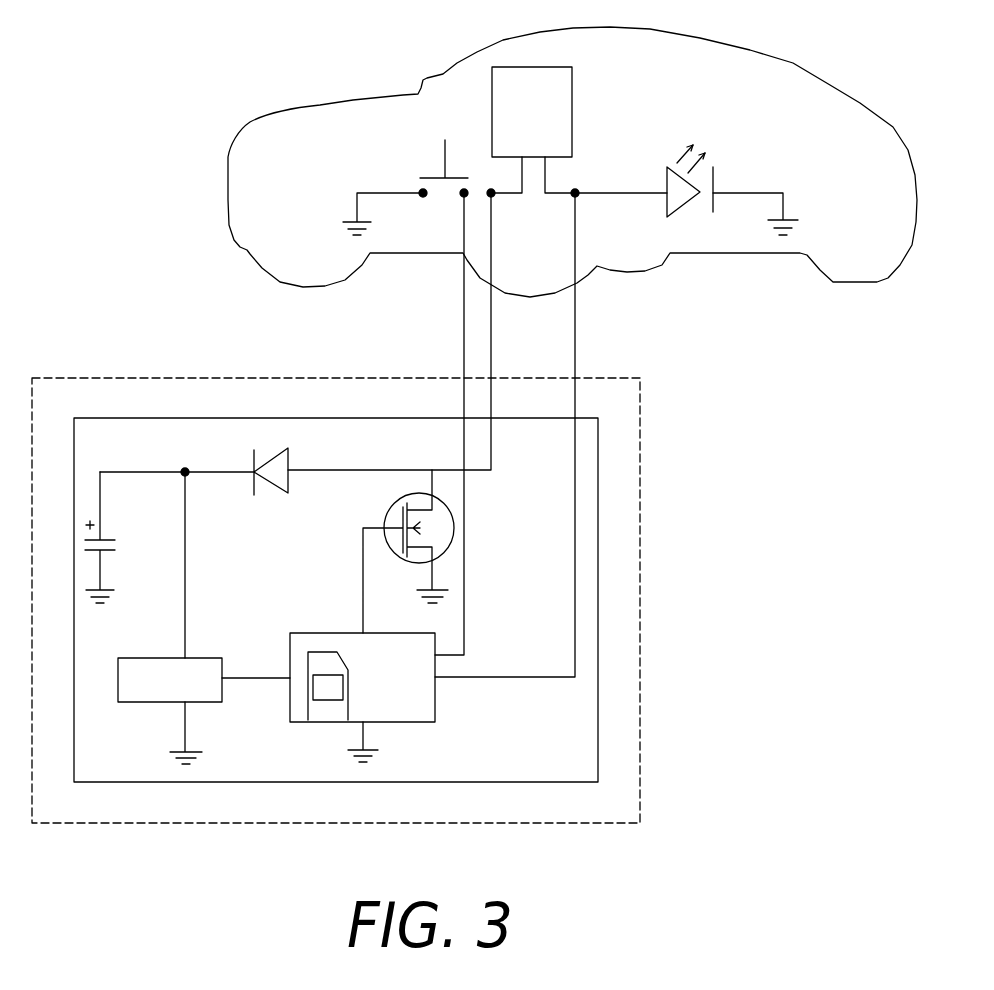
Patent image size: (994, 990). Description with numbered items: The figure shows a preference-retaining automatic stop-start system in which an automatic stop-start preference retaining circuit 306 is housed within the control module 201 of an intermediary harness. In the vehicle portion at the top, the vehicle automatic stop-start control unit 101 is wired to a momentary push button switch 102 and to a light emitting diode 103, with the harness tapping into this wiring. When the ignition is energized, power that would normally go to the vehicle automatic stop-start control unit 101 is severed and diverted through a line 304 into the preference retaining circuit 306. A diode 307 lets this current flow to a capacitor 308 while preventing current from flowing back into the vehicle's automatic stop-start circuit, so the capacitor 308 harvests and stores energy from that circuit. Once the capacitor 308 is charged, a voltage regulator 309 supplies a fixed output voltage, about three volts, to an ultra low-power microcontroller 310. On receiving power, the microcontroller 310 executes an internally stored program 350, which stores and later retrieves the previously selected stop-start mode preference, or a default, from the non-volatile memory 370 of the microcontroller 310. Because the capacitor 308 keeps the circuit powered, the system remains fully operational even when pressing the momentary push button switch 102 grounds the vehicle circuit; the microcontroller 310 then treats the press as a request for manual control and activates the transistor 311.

The vehicle automatic stop-start control unit 101 is at (545, 67).
The momentary push button switch 102 is at (445, 140).
The light emitting diode 103 is at (695, 143).
The control module 201 is at (640, 597).
The power supply line 304 is at (491, 338).
The automatic stop-start preference retaining circuit 306 is at (503, 782).
The diode 307 is at (288, 448).
The capacitor 308 is at (117, 550).
The voltage regulator 309 is at (135, 702).
The microcontroller 310 is at (290, 648).
The transistor 311 is at (385, 510).
The program 350 is at (327, 675).
The non-volatile memory 370 is at (328, 722).